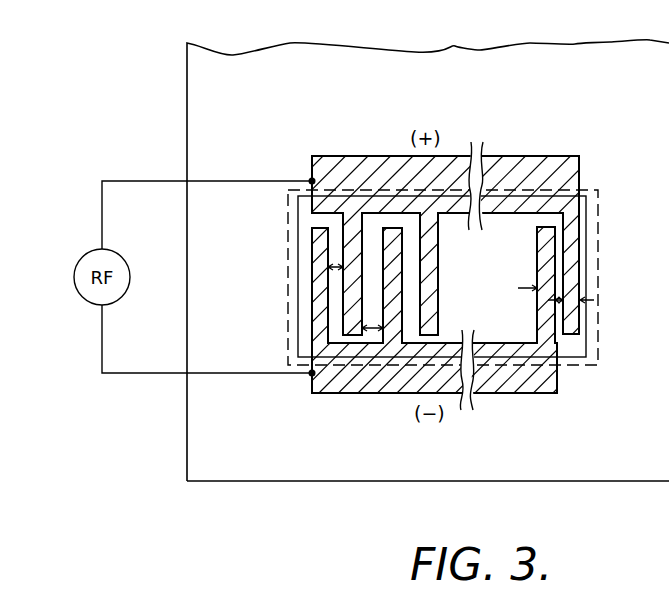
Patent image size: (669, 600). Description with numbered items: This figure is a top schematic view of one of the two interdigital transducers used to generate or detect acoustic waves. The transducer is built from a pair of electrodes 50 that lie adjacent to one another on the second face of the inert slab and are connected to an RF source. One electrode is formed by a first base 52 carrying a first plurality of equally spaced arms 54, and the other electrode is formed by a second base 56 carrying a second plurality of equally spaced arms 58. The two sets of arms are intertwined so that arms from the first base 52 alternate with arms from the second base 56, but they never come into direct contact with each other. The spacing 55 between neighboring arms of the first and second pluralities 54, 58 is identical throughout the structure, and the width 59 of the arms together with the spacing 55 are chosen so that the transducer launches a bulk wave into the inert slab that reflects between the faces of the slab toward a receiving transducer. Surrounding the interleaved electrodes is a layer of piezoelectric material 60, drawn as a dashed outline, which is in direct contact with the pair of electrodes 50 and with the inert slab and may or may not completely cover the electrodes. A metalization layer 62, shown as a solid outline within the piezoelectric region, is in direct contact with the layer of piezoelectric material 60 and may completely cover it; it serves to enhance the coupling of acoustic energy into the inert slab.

The pair of electrodes 50 is at (570, 170).
The first base 52 is at (495, 385).
The first plurality of equally spaced arms 54 is at (400, 228).
The spacing 55 is at (369, 326).
The second base 56 is at (478, 162).
The second plurality of equally spaced arms 58 is at (424, 336).
The width 59 is at (548, 292).
The layer of piezoelectric material 60 is at (287, 279).
The metalization layer 62 is at (297, 338).